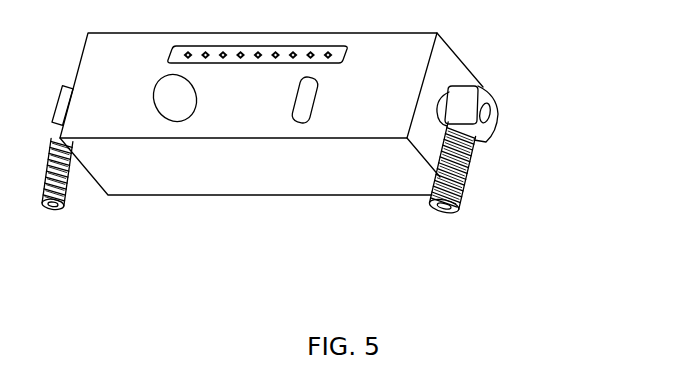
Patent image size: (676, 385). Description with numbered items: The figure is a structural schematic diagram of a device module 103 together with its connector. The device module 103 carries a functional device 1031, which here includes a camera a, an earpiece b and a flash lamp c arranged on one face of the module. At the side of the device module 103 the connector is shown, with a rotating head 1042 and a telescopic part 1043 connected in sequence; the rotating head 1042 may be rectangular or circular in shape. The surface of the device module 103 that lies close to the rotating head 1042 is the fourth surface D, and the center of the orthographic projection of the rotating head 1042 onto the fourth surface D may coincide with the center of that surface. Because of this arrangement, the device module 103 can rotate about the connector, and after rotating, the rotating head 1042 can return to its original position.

The device module 103 is at (378, 175).
The functional device 1031 is at (246, 172).
The camera a is at (158, 127).
The earpiece b is at (230, 75).
The flash lamp c is at (295, 134).
The rotating head 1042 is at (504, 115).
The telescopic part 1043 is at (480, 173).
The fourth surface D is at (455, 67).